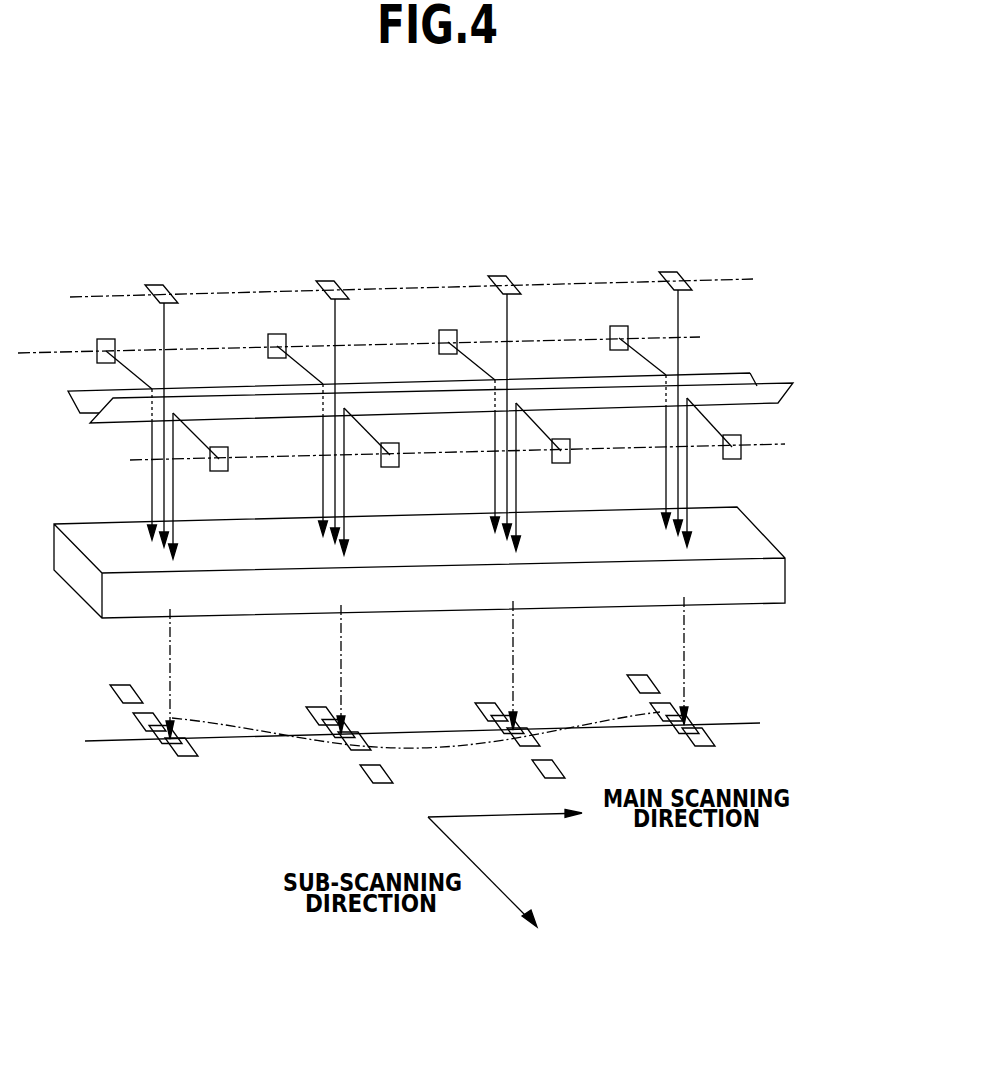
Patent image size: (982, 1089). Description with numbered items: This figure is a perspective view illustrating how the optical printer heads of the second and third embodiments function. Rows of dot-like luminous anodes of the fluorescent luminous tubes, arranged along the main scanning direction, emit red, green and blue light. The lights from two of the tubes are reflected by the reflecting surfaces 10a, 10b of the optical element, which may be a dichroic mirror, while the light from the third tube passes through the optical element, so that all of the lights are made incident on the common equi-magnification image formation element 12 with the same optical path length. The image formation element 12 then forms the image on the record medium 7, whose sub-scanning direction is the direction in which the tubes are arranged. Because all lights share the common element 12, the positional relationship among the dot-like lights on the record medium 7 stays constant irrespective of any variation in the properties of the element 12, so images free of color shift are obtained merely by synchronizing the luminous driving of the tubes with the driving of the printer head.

The reflecting surface 10a is at (762, 395).
The reflecting surface 10b is at (722, 375).
The equi-magnification image formation element 12 is at (773, 576).
The record medium 7 is at (727, 702).